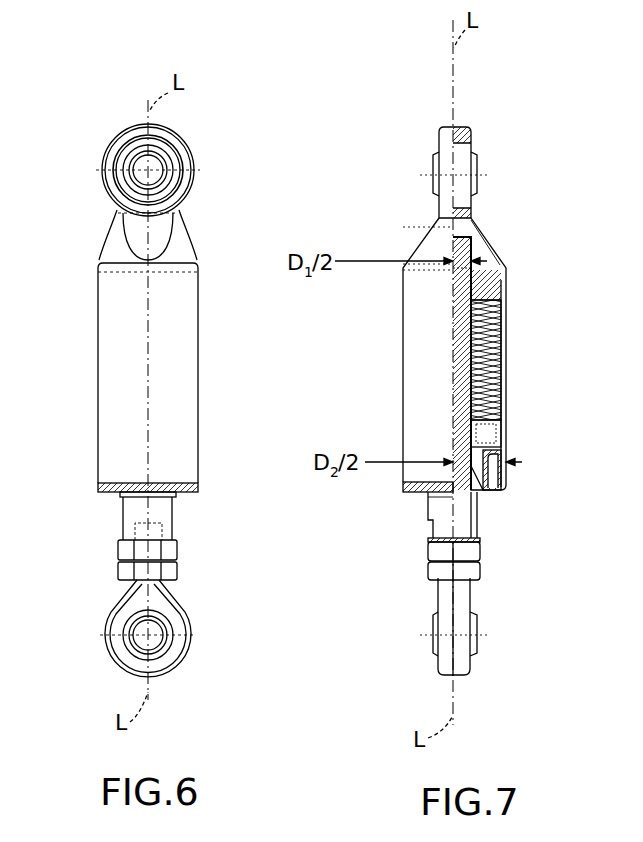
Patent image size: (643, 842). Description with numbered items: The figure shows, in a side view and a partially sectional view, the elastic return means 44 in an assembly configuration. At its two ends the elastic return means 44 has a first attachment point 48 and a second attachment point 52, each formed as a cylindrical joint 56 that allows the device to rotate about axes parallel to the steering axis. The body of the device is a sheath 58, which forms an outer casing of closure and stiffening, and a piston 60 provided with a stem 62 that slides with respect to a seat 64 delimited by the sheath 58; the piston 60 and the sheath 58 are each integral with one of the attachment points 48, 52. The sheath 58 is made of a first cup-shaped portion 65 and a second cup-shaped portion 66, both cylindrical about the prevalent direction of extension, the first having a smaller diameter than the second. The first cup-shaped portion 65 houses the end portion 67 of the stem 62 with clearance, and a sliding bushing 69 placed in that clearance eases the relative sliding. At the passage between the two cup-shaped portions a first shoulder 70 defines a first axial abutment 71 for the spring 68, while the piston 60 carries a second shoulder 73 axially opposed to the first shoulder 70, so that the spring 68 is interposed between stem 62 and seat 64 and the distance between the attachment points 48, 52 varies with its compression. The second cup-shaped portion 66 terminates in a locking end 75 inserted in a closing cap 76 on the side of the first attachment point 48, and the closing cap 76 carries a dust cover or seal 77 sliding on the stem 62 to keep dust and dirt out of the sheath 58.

In FIG. 6, the elastic return means 44 is at (240, 125).
In FIG. 7, the elastic return means 44 is at (516, 144).
In FIG. 6, the attachment point 52 is at (120, 128).
In FIG. 7, the attachment point 52 is at (417, 140).
In FIG. 6, the cylindrical joints 56 is at (104, 98).
In FIG. 7, the cylindrical joints 56 is at (418, 128).
In FIG. 6, the first attachment point 48 is at (184, 676).
In FIG. 7, the first attachment point 48 is at (500, 652).
In FIG. 6, the sheath 58 is at (119, 373).
In FIG. 6, the piston 60 is at (163, 505).
In FIG. 7, the piston 60 is at (478, 512).
In FIG. 7, the stem 62 is at (466, 285).
In FIG. 7, the seat 64 is at (462, 247).
In FIG. 6, the first cup-shaped portion 65 is at (180, 255).
In FIG. 7, the first cup-shaped portion 65 is at (507, 285).
In FIG. 6, the second cup-shaped portion 66 is at (118, 385).
In FIG. 7, the second cup-shaped portion 66 is at (508, 410).
In FIG. 7, the end portion 67 is at (458, 273).
In FIG. 7, the spring 68 is at (507, 363).
In FIG. 7, the sliding bushing 69 is at (473, 250).
In FIG. 7, the first shoulder 70 is at (474, 293).
In FIG. 7, the first axial abutment 71 is at (457, 312).
In FIG. 7, the second shoulder 73 is at (490, 432).
In FIG. 6, the locking end 75 is at (195, 478).
In FIG. 7, the locking end 75 is at (508, 463).
In FIG. 7, the closing cap 76 is at (497, 485).
In FIG. 7, the dust cover or seal 77 is at (452, 495).